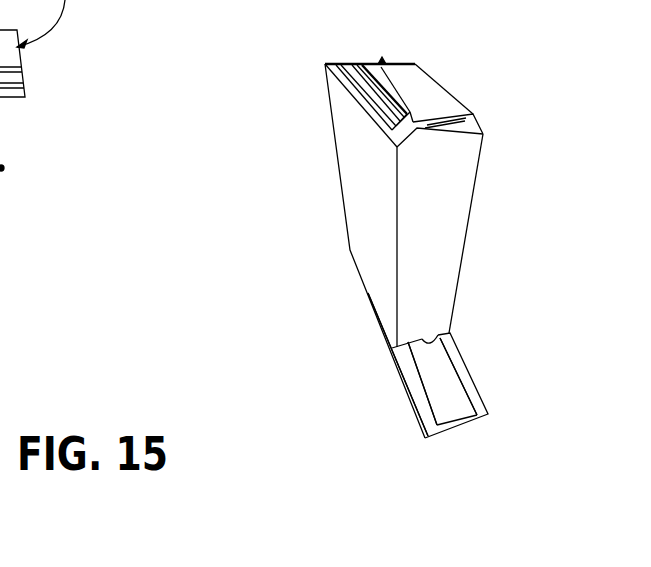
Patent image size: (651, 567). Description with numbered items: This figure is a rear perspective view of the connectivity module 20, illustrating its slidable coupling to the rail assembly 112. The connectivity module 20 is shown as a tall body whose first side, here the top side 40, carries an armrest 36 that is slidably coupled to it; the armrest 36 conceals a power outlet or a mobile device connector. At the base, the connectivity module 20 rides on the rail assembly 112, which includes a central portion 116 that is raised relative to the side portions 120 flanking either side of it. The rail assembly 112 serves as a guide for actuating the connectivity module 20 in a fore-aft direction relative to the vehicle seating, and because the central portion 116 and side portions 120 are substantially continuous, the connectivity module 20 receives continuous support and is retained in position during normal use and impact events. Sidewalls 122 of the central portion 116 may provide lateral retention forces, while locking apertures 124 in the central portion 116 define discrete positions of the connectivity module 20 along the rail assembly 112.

The connectivity module 20 is at (467, 246).
The armrest 36 is at (430, 100).
The top side 40 is at (445, 128).
The rail assembly 112 is at (455, 363).
The central portion 116 is at (443, 377).
The side portions 120 is at (477, 397).
The sidewalls 122 is at (418, 378).
The locking apertures 124 is at (445, 338).